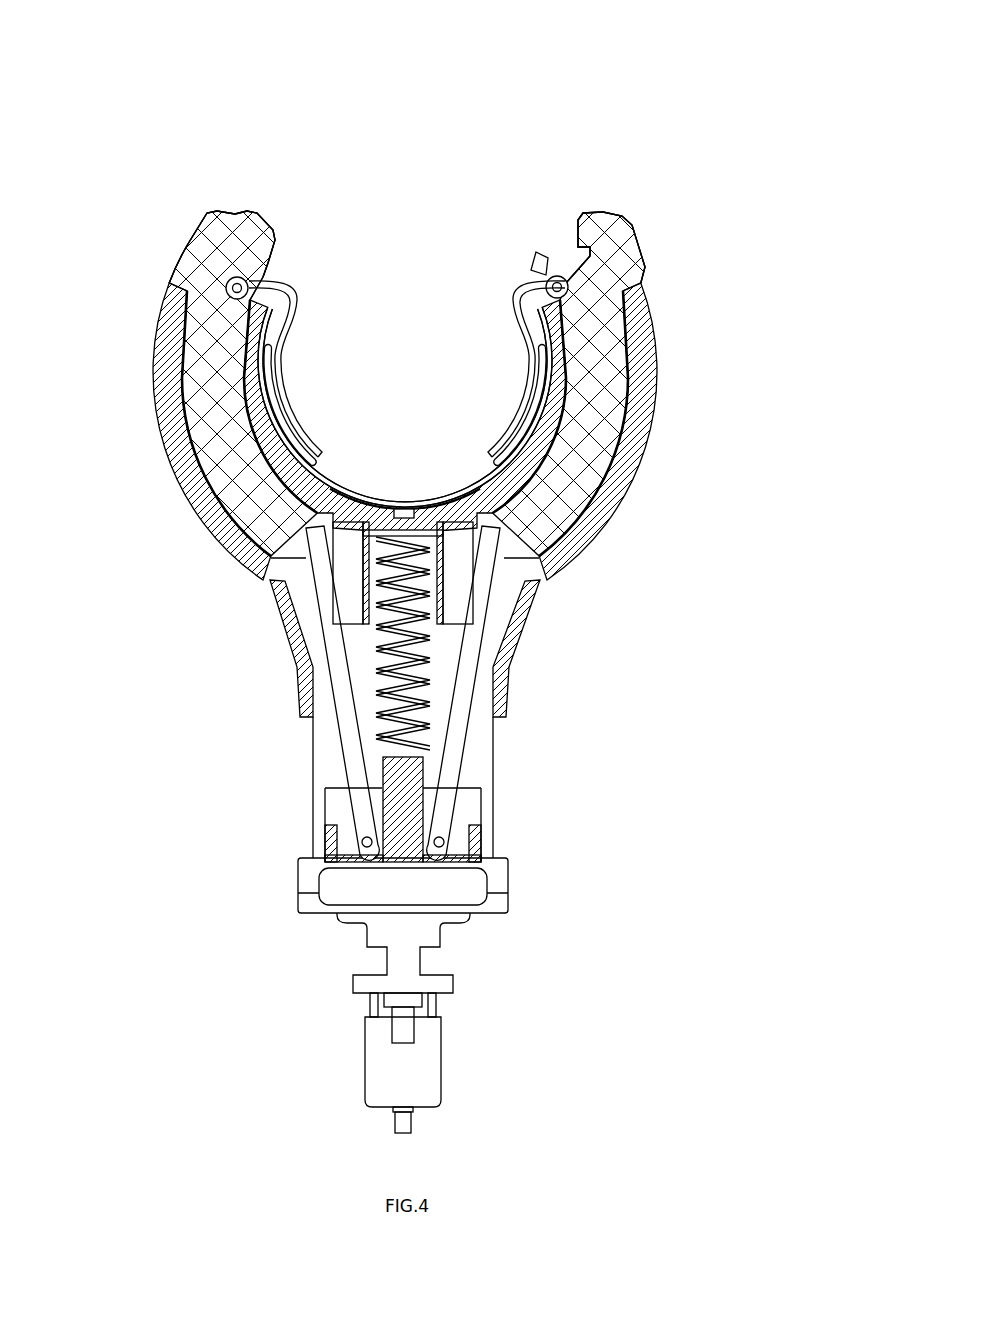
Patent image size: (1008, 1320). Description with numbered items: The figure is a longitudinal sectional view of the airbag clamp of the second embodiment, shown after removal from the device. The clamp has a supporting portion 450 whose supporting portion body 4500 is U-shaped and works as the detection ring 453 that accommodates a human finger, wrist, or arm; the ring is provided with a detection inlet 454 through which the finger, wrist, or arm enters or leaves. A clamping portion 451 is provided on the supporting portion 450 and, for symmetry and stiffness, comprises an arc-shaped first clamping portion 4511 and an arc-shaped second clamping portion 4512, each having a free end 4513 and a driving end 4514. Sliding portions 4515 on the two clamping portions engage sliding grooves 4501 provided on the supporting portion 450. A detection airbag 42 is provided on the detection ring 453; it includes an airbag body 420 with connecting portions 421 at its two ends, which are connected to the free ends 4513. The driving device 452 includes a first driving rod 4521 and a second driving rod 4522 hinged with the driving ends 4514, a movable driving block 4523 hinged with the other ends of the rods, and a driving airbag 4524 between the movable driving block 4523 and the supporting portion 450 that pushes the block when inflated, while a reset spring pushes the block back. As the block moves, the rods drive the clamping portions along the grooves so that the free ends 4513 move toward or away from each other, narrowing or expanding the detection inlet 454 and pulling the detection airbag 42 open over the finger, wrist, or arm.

The detection airbag 42 is at (297, 293).
The airbag body 420 is at (340, 497).
The connecting portions 421 is at (242, 285).
The supporting portion 450 is at (500, 667).
The supporting portion body 4500 is at (617, 483).
The sliding grooves 4501 is at (245, 400).
The clamping portion 451 is at (600, 230).
The first clamping portion 4511 is at (186, 292).
The second clamping portion 4512 is at (610, 357).
The free ends 4513 is at (215, 245).
The driving ends 4514 is at (295, 537).
The sliding portions 4515 is at (217, 353).
The driving device 452 is at (510, 808).
The first driving rod 4521 is at (345, 718).
The second driving rod 4522 is at (463, 707).
The movable driving block 4523 is at (347, 823).
The driving airbag 4524 is at (437, 883).
The detection ring 453 is at (285, 399).
The detection inlet 454 is at (403, 238).